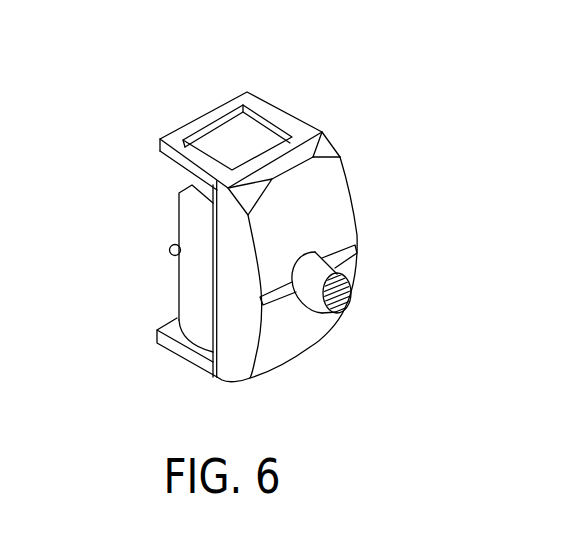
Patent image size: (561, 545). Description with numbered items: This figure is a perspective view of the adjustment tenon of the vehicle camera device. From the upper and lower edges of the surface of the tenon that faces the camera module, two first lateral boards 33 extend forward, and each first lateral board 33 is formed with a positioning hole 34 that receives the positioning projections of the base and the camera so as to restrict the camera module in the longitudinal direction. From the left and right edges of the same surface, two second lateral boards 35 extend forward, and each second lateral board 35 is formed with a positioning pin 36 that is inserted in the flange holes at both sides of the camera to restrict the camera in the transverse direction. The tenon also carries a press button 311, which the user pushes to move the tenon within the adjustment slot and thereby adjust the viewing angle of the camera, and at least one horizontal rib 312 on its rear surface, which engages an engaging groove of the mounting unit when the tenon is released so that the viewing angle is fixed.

The first lateral board 33 is at (188, 122).
The positioning hole 34 is at (232, 138).
The second lateral board 35 is at (188, 223).
The positioning pin 36 is at (170, 251).
The press button 311 is at (322, 265).
The horizontal rib 312 is at (282, 293).